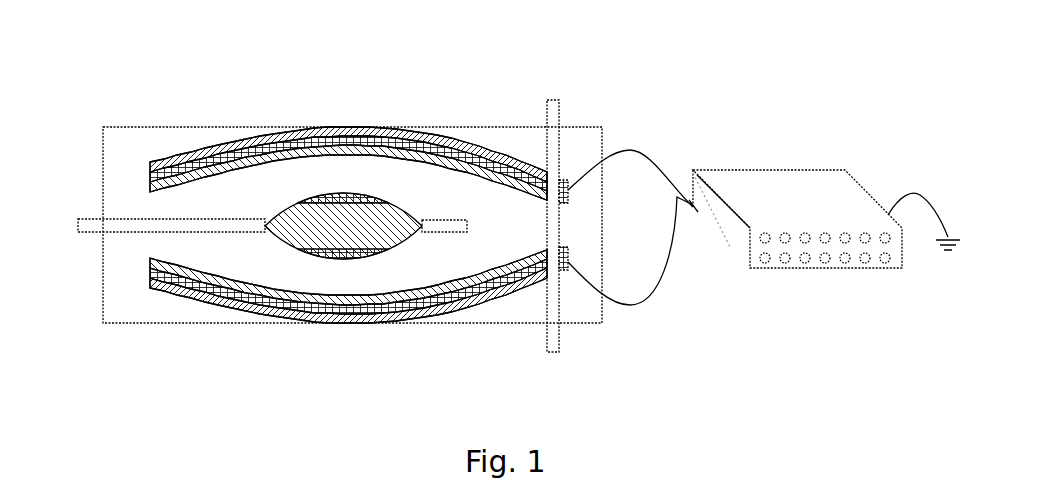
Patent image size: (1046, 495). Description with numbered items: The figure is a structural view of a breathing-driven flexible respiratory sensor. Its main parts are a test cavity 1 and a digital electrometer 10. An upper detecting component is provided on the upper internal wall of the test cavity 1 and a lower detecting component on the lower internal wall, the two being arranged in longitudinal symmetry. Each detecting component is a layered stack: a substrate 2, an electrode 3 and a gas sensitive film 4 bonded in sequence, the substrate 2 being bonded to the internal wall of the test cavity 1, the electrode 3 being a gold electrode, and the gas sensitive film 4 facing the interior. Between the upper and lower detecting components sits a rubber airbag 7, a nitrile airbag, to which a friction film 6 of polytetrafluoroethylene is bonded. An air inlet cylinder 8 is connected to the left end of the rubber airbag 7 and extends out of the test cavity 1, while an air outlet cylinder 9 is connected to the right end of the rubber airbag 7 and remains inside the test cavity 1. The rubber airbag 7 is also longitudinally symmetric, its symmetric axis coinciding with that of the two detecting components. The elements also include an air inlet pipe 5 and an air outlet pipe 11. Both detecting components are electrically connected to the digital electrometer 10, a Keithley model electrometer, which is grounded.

The test cavity 1 is at (138, 157).
The substrate 2 is at (438, 142).
The electrode 3 is at (333, 128).
The gas sensitive film 4 is at (257, 157).
The air inlet pipe 5 is at (558, 148).
The friction film 6 is at (345, 192).
The rubber airbag 7 is at (352, 210).
The air inlet cylinder 8 is at (155, 222).
The air outlet cylinder 9 is at (447, 222).
The digital electrometer 10 is at (780, 193).
The air outlet pipe 11 is at (560, 313).